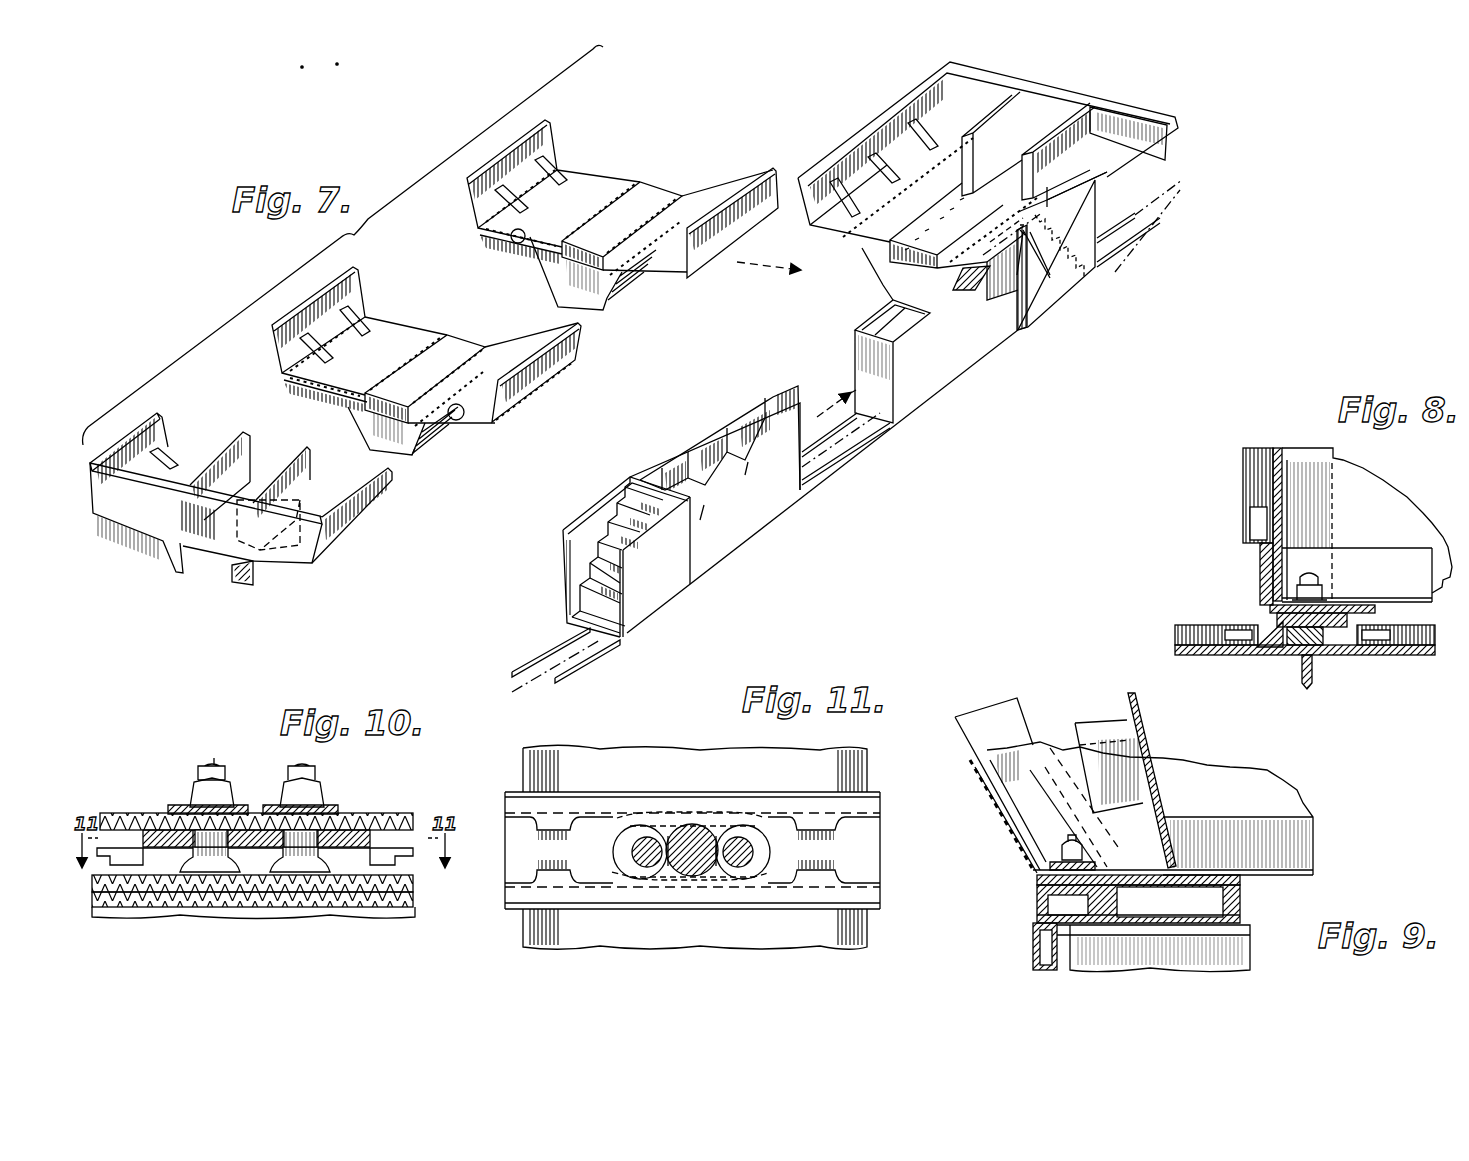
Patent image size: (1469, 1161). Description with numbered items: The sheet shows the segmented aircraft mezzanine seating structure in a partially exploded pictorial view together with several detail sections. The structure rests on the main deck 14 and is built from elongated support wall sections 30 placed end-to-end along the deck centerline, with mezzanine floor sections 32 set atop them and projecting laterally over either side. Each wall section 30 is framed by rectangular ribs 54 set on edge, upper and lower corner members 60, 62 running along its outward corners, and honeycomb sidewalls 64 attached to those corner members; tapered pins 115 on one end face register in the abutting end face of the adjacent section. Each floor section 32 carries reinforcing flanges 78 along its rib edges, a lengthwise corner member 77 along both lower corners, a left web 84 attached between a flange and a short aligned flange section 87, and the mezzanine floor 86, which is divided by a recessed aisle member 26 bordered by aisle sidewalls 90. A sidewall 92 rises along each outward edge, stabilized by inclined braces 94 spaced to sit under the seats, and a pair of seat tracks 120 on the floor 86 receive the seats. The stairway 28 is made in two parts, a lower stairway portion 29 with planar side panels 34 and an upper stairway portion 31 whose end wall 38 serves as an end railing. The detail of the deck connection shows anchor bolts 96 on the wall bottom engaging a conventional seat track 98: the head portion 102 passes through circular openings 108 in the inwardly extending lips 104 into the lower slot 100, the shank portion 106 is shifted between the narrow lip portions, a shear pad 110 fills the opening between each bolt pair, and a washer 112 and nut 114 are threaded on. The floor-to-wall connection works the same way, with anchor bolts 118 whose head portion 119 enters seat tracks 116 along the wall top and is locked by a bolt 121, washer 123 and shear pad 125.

In FIG. 8, the main deck 14 is at (1190, 624).
In FIG. 7, the aisle member 26 is at (458, 350).
In FIG. 7, the stairway 28 is at (1078, 283).
In FIG. 7, the lower stairway portion 29 is at (665, 572).
In FIG. 7, the support wall section 30 is at (933, 385).
In FIG. 7, the upper stairway portion 31 is at (248, 570).
In FIG. 7, the mezzanine floor section 32 is at (406, 474).
In FIG. 7, the side panels 34 is at (575, 587).
In FIG. 7, the end wall 38 is at (137, 520).
In FIG. 7, the rib 54 is at (735, 440).
In FIG. 9, the upper corner member 60 is at (1037, 950).
In FIG. 8, the lower corner member 62 is at (1265, 597).
In FIG. 8, the sidewall 64 is at (1245, 480).
In FIG. 9, the corner member 77 is at (1000, 815).
In FIG. 9, the reinforcing flange 78 is at (985, 718).
In FIG. 9, the left web 84 is at (1142, 730).
In FIG. 7, the mezzanine floor 86 is at (641, 176).
In FIG. 9, the reinforcing flange 87 is at (1092, 724).
In FIG. 7, the aisle sidewalls 90 is at (370, 413).
In FIG. 7, the sidewall 92 is at (472, 207).
In FIG. 7, the braces 94 is at (368, 322).
In FIG. 10, the anchor bolts 96 is at (205, 820).
In FIG. 7, the seat track 98 is at (560, 635).
In FIG. 8, the seat track 98 is at (1282, 648).
In FIG. 11, the seat track 98 is at (697, 780).
In FIG. 10, the lower slot 100 is at (410, 855).
In FIG. 11, the lower slot 100 is at (860, 862).
In FIG. 10, the head portion 102 is at (210, 862).
In FIG. 11, the head portion 102 is at (760, 862).
In FIG. 10, the lips 104 is at (355, 830).
In FIG. 11, the lips 104 is at (825, 825).
In FIG. 10, the shank portion 106 is at (285, 842).
In FIG. 11, the shank portion 106 is at (645, 836).
In FIG. 10, the circular openings 108 is at (350, 860).
In FIG. 11, the circular openings 108 is at (830, 902).
In FIG. 8, the shear pad 110 is at (1268, 618).
In FIG. 10, the shear pad 110 is at (372, 838).
In FIG. 11, the shear pad 110 is at (692, 880).
In FIG. 10, the washer 112 is at (240, 812).
In FIG. 10, the nut 114 is at (228, 785).
In FIG. 7, the tapered pins 115 is at (802, 223).
In FIG. 7, the seat tracks 116 is at (782, 390).
In FIG. 9, the seat tracks 116 is at (1040, 922).
In FIG. 9, the anchor bolts 118 is at (1058, 846).
In FIG. 9, the head portion 119 is at (1040, 912).
In FIG. 7, the seat tracks 120 is at (446, 432).
In FIG. 9, the bolt 121 is at (1058, 862).
In FIG. 9, the washer 123 is at (1040, 878).
In FIG. 9, the shear pad 125 is at (1040, 895).